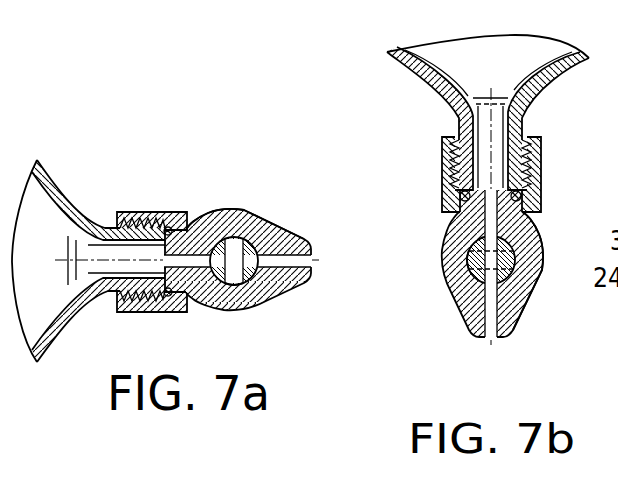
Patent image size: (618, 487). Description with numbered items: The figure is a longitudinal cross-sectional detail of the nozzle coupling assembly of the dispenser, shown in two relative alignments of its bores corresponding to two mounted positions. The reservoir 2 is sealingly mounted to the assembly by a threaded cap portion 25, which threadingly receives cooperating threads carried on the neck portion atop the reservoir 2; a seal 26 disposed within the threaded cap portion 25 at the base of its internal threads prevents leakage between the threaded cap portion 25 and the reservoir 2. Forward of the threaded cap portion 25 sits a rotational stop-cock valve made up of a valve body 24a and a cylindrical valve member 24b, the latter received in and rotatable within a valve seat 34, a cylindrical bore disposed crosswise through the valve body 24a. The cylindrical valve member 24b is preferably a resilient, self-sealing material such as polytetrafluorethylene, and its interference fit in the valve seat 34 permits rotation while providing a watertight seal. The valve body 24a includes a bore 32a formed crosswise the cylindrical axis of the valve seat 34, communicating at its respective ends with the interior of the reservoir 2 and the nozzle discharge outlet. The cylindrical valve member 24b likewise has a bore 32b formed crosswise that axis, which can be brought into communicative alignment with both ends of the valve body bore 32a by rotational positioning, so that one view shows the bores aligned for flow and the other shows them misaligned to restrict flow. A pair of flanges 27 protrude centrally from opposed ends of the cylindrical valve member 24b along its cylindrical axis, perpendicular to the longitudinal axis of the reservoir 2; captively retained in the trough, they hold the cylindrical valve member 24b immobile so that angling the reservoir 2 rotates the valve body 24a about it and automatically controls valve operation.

In FIG. 7a, the reservoir 2 is at (54, 187).
In FIG. 7b, the reservoir 2 is at (390, 56).
In FIG. 7a, the threaded cap portion 25 is at (126, 211).
In FIG. 7b, the threaded cap portion 25 is at (443, 152).
In FIG. 7a, the seal 26 is at (167, 300).
In FIG. 7b, the seal 26 is at (538, 193).
In FIG. 7a, the valve body 24a is at (263, 294).
In FIG. 7b, the valve body 24a is at (523, 303).
In FIG. 7a, the cylindrical valve member 24b is at (220, 238).
In FIG. 7b, the cylindrical valve member 24b is at (474, 262).
In FIG. 7a, the valve body bore 32a is at (186, 257).
In FIG. 7b, the valve body bore 32a is at (489, 222).
In FIG. 7a, the cylindrical valve member bore 32b is at (243, 238).
In FIG. 7b, the cylindrical valve member bore 32b is at (502, 275).
In FIG. 7a, the valve seat 34 is at (287, 232).
In FIG. 7b, the valve seat 34 is at (536, 244).
In FIG. 7a, the flanges 27 is at (233, 288).
In FIG. 7b, the flanges 27 is at (455, 268).